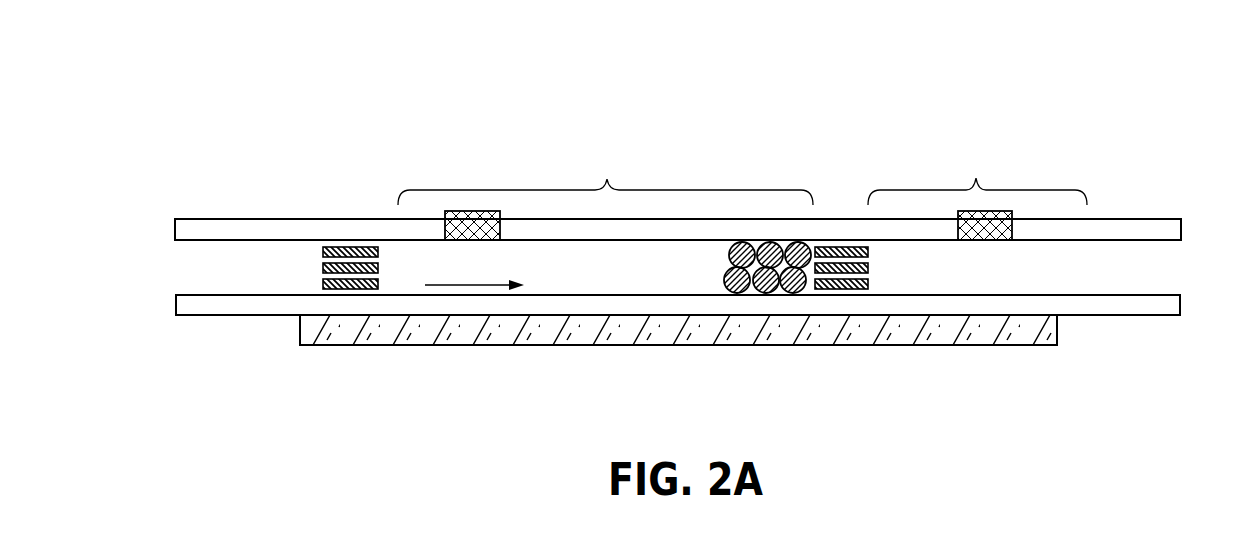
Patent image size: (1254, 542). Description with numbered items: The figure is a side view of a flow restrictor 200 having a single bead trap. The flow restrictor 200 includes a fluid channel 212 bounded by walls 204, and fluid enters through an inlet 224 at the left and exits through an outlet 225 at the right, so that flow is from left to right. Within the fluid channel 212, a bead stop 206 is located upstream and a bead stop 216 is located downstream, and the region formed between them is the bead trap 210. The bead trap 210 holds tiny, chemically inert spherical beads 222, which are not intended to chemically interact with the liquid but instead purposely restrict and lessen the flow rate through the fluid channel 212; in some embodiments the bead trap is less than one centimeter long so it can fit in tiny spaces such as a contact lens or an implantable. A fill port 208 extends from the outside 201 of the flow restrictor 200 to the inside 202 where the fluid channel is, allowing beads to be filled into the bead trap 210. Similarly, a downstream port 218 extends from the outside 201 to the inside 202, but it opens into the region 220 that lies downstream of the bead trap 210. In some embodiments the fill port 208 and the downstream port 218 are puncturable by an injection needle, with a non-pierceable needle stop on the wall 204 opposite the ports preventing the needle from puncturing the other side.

The flow restrictor 200 is at (266, 79).
The outside 201 is at (235, 130).
The inside 202 is at (256, 281).
The walls 204 is at (212, 223).
The bead stop 206 is at (345, 262).
The fill port 208 is at (478, 218).
The bead trap 210 is at (605, 177).
The fluid channel 212 is at (572, 270).
The bead stop 216 is at (842, 250).
The downstream port 218 is at (993, 218).
The region 220 is at (353, 388).
The beads 222 is at (788, 282).
The inlet 224 is at (192, 274).
The outlet 225 is at (1165, 273).